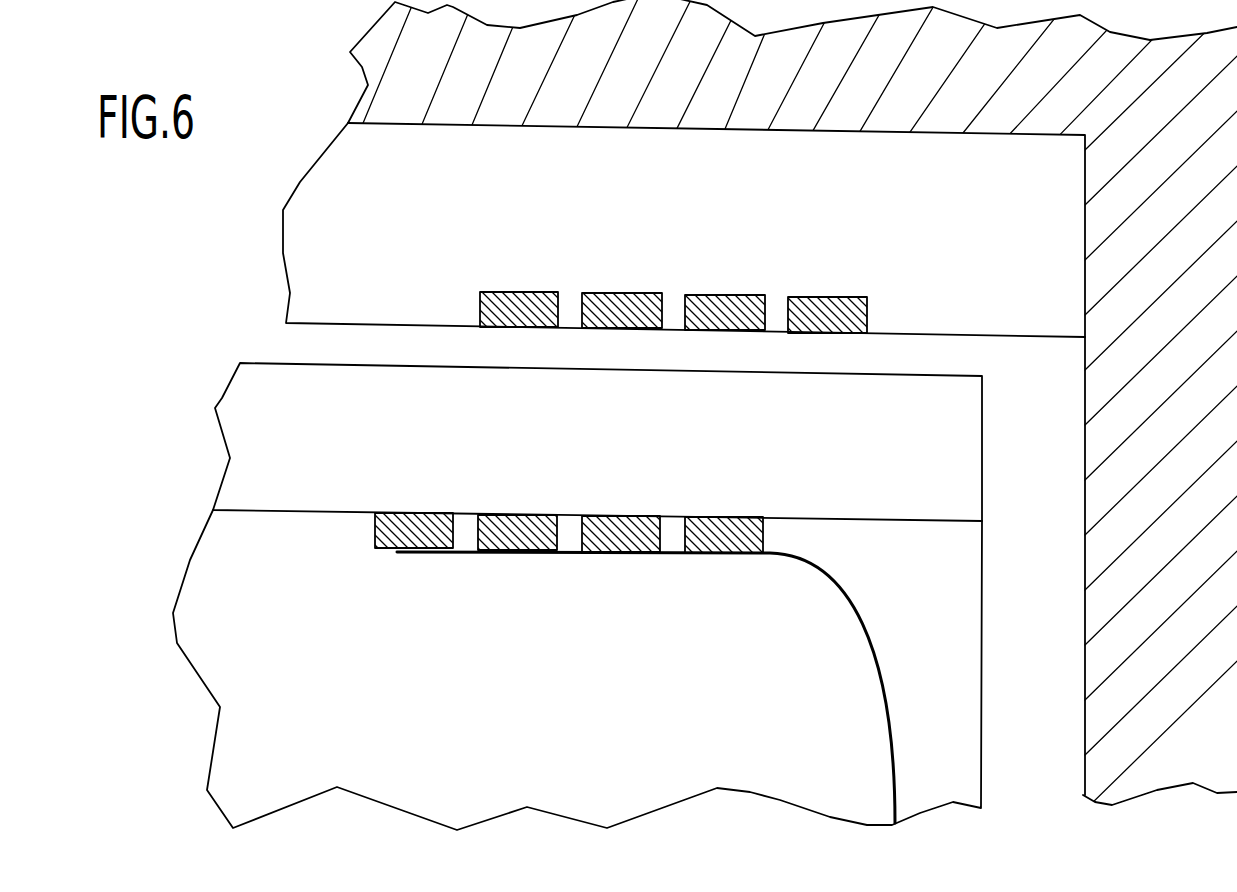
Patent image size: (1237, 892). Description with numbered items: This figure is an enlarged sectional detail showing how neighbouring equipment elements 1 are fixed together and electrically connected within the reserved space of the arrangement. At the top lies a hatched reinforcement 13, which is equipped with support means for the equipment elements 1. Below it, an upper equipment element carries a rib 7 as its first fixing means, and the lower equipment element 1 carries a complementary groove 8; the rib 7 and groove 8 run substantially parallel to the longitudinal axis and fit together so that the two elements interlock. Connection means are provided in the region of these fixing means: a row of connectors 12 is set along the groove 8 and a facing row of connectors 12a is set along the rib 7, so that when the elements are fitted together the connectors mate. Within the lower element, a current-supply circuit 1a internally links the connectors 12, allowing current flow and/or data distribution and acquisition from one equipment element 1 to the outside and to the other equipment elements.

The equipment element 1 is at (605, 730).
The current-supply circuit 1a is at (843, 588).
The rib 7 is at (335, 237).
The groove 8 is at (303, 447).
The connector 12 is at (518, 552).
The connector 12a is at (793, 280).
The reinforcement 13 is at (615, 85).